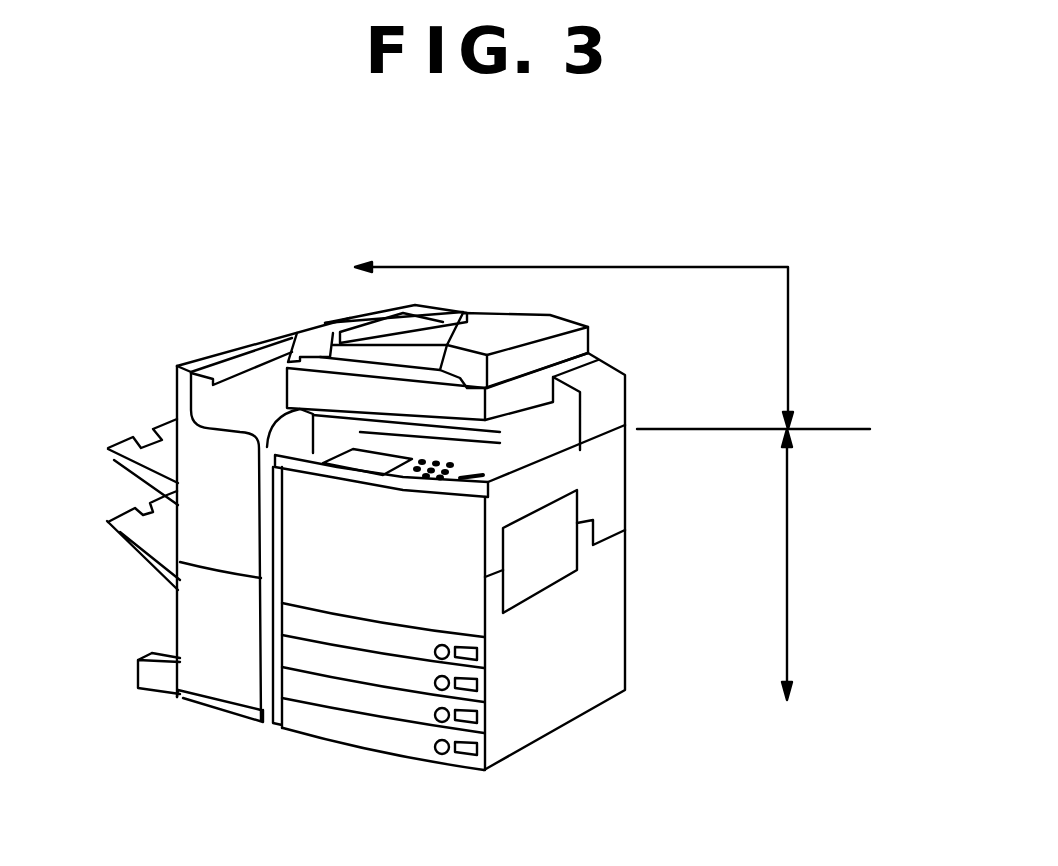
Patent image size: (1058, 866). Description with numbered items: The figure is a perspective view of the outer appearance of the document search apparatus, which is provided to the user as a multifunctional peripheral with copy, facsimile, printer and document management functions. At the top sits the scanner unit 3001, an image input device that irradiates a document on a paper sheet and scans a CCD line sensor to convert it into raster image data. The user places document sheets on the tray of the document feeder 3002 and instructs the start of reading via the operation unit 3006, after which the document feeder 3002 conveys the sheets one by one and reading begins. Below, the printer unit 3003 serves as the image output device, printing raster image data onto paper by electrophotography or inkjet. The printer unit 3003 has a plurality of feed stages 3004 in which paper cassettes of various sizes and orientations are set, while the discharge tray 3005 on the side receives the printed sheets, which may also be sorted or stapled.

The scanner unit 3001 is at (682, 267).
The document feeder 3002 is at (325, 327).
The printer unit 3003 is at (787, 562).
The feed stages 3004 is at (445, 762).
The discharge tray 3005 is at (123, 442).
The operation unit 3006 is at (500, 430).